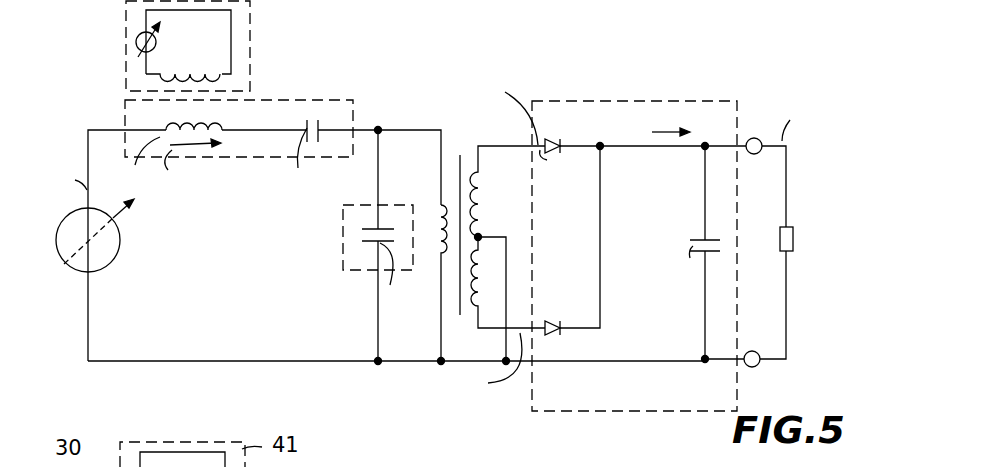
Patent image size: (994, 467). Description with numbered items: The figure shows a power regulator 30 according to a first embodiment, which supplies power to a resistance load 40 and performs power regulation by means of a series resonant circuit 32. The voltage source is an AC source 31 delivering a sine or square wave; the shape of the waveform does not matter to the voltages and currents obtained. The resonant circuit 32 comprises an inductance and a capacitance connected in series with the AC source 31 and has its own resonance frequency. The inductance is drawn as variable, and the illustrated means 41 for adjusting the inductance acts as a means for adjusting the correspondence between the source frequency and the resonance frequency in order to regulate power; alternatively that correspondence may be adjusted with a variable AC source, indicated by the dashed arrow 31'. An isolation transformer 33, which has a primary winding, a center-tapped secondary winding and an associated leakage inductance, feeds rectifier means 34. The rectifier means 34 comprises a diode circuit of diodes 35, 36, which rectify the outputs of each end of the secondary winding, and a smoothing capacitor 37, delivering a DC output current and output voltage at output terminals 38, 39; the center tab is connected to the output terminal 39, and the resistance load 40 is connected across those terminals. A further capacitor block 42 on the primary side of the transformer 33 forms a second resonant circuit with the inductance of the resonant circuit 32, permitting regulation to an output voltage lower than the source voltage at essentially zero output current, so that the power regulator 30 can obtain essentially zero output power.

The power regulator 30 is at (102, 71).
The AC source 31 is at (93, 224).
The variable AC source 31' is at (88, 278).
The series resonant circuit 32 is at (292, 108).
The isolation transformer 33 is at (457, 150).
The rectifier means 34 is at (661, 104).
The diode 35 is at (557, 130).
The diode 36 is at (550, 322).
The smoothing capacitor 37 is at (688, 243).
The output terminal 38 is at (751, 137).
The output terminal 39 is at (759, 366).
The resistance load 40 is at (797, 235).
The means for adjusting the inductance 41 is at (238, 34).
The capacitor C2 block 42 is at (352, 273).